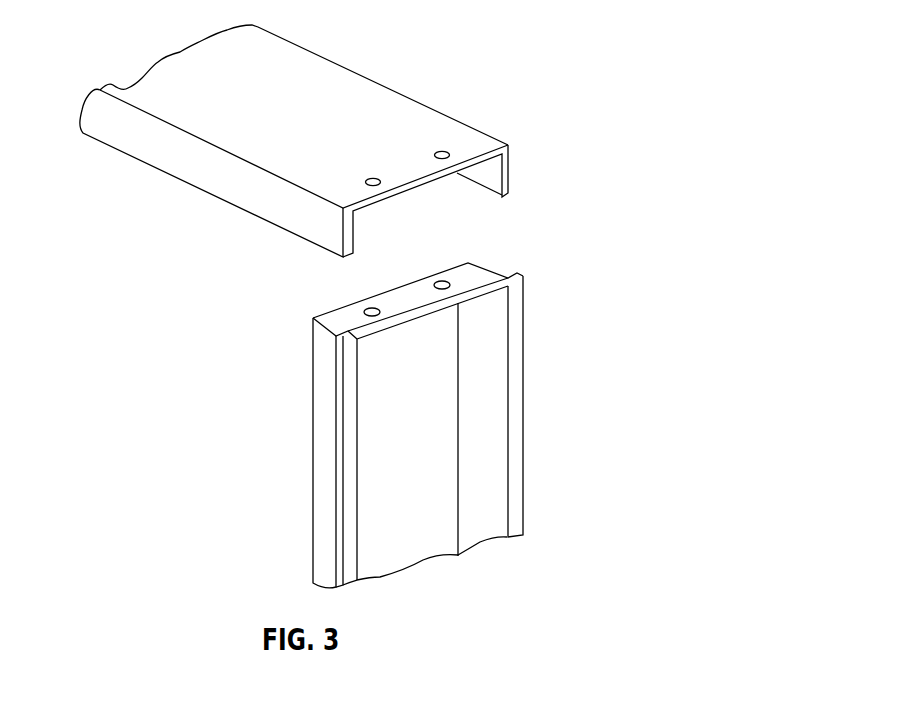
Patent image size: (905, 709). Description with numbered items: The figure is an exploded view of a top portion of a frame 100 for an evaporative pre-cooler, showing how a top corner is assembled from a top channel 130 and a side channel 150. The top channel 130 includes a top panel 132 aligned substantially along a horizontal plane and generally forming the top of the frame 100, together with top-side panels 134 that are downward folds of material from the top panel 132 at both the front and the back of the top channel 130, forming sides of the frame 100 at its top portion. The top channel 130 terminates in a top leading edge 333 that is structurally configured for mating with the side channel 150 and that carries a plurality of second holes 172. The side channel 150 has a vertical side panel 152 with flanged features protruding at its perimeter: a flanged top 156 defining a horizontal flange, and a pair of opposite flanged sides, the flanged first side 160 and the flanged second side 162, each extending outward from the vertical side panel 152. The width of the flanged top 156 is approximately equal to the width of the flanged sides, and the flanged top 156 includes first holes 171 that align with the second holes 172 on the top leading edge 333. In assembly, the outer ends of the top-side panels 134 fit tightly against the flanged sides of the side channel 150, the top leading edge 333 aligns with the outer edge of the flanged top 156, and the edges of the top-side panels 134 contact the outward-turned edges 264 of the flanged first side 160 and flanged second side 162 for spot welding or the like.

The frame 100 is at (553, 204).
The top channel 130 is at (380, 71).
The top panel 132 is at (278, 58).
The top-side panels 134 is at (188, 167).
The second holes 172 is at (451, 148).
The top leading edge 333 is at (412, 193).
The side channel 150 is at (284, 368).
The vertical side panel 152 is at (402, 532).
The flanged top 156 is at (400, 305).
The flanged first side 160 is at (318, 509).
The flanged second side 162 is at (497, 446).
The first holes 171 is at (451, 282).
The outward-turned edges 264 is at (335, 440).